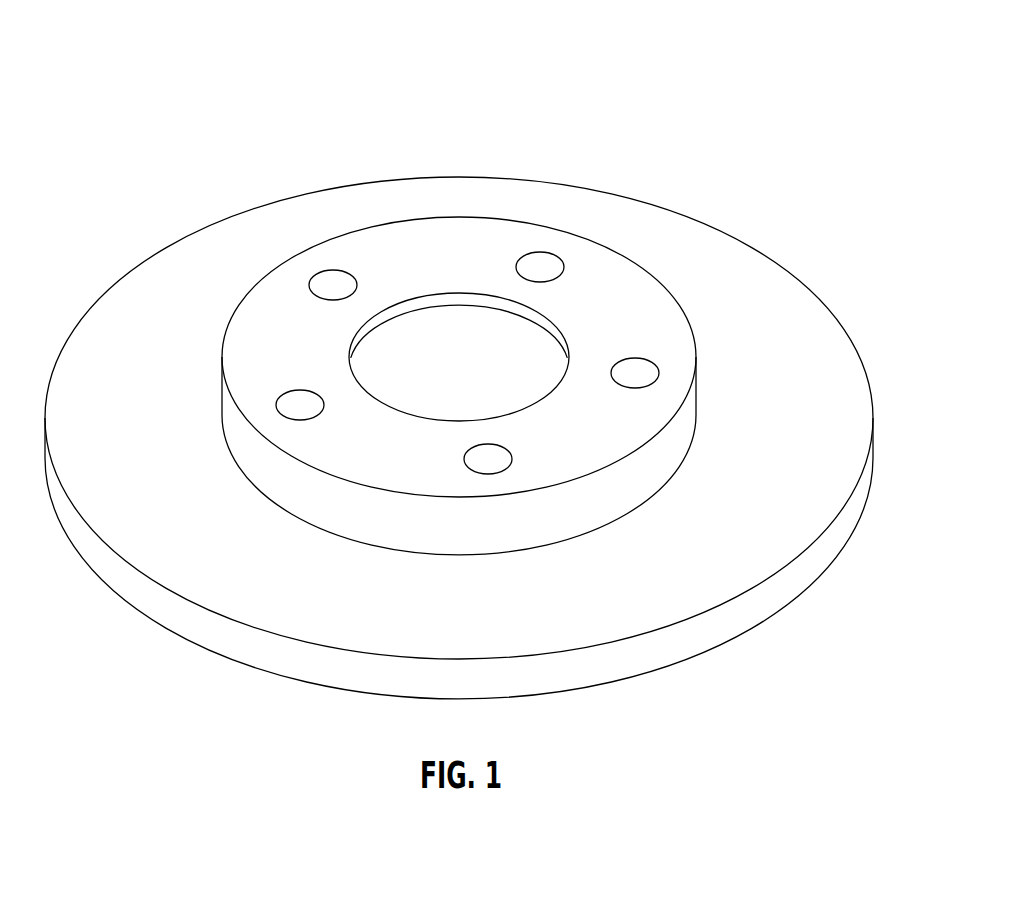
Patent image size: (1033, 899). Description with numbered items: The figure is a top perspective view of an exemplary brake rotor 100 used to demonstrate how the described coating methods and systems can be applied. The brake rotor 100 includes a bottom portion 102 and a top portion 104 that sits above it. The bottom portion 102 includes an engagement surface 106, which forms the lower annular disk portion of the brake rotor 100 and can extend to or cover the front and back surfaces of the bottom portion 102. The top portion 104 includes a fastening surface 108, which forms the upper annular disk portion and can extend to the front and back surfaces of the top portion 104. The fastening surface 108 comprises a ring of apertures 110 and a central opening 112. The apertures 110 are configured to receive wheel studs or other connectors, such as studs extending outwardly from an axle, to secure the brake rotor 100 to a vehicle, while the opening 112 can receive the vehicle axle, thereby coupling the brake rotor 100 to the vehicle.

The brake rotor 100 is at (124, 34).
The bottom portion 102 is at (820, 298).
The top portion 104 is at (490, 218).
The engagement surface 106 is at (828, 392).
The fastening surface 108 is at (615, 285).
The apertures 110 is at (552, 253).
The opening 112 is at (415, 337).